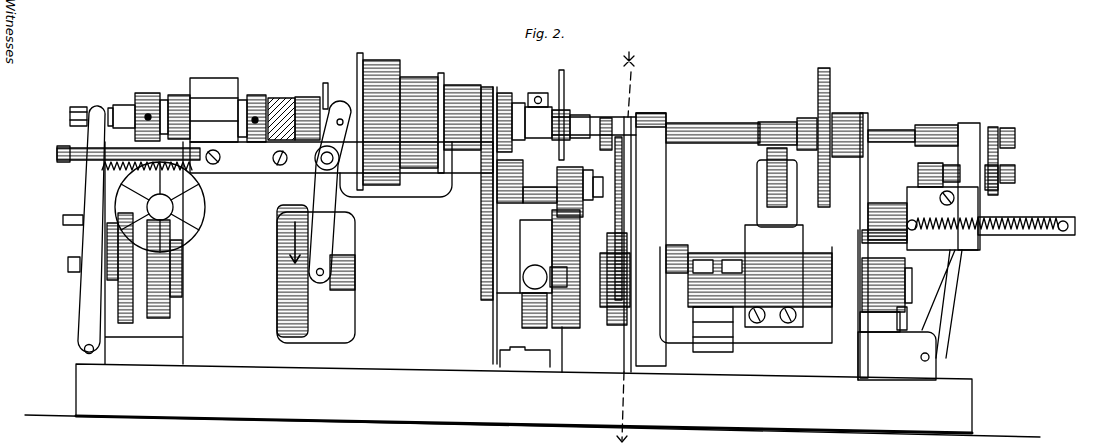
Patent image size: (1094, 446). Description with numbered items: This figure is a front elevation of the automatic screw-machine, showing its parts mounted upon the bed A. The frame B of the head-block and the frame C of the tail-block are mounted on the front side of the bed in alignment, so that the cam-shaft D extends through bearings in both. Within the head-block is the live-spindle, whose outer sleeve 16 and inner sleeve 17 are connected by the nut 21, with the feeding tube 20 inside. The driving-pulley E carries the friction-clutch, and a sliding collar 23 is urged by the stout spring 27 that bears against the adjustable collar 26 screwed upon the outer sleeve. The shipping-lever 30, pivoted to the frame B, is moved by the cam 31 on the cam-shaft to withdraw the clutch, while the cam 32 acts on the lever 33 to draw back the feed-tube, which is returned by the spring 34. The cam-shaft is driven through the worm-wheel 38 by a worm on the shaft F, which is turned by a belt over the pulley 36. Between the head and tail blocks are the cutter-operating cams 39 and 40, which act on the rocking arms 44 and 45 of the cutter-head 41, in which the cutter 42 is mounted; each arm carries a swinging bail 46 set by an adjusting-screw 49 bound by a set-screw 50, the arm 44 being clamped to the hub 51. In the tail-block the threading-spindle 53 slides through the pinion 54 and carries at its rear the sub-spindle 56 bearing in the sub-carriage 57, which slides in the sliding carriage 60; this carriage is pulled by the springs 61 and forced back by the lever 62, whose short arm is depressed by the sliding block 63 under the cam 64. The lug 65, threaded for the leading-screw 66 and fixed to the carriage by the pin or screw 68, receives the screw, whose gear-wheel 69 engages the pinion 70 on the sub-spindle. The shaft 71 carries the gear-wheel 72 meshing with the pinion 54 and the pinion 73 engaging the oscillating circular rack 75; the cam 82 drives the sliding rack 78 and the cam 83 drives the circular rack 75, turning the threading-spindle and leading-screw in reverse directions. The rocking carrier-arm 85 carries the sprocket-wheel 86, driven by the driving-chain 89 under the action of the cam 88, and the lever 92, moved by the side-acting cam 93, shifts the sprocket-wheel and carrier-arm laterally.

The bed A is at (532, 400).
The head-block frame B is at (345, 277).
The tail-block frame C is at (746, 307).
The cam-shaft D is at (342, 263).
The driving-pulley E is at (418, 80).
The shaft F is at (160, 207).
The outer sleeve 16 is at (523, 110).
The inner sleeve 17 is at (131, 127).
The feeding tube 20 is at (70, 117).
The nut 21 is at (152, 90).
The sliding collar 23 is at (307, 118).
The adjustable collar 26 is at (258, 95).
The stout spring 27 is at (286, 92).
The shipping-lever 30 is at (330, 183).
The cam 31 is at (285, 333).
The cam 32 is at (118, 308).
The lever 33 is at (75, 216).
The spring 34 is at (105, 165).
The pulley 36 is at (130, 195).
The worm-wheel 38 is at (160, 314).
The cutter-operating cam 39 is at (570, 328).
The cutter-operating cam 40 is at (535, 326).
The cutter-head 41 is at (521, 181).
The cutter 42 is at (566, 88).
The rocking arm 44 is at (552, 196).
The rocking arm 45 is at (536, 256).
The swinging bail 46 is at (506, 240).
The adjusting-screw 49 is at (535, 277).
The set-screw 50 is at (558, 270).
The hub 51 is at (585, 165).
The threading-spindle 53 is at (698, 118).
The pinion 54 is at (812, 118).
The sub-spindle 56 is at (923, 122).
The sub-carriage 57 is at (969, 186).
The sliding carriage 60 is at (923, 218).
The springs 61 is at (1030, 220).
The lever 62 is at (948, 300).
The sliding block 63 is at (910, 313).
The cam 64 is at (907, 262).
The lug 65 is at (920, 165).
The leading-screw 66 is at (952, 168).
The pin or screw 68 is at (954, 198).
The gear-wheel 69 is at (998, 165).
The pinion 70 is at (1000, 120).
The shaft 71 is at (700, 138).
The gear-wheel 72 is at (830, 100).
The pinion 73 is at (775, 122).
The oscillating circular rack 75 is at (767, 188).
The sliding rack 78 is at (712, 350).
The cam 82 is at (712, 262).
The cam 83 is at (774, 276).
The rocking carrier-arm 85 is at (612, 118).
The sprocket-wheel 86 is at (624, 118).
The cam 88 is at (617, 324).
The driving-chain 89 is at (622, 162).
The lever 92 is at (621, 222).
The side-acting cam 93 is at (600, 300).